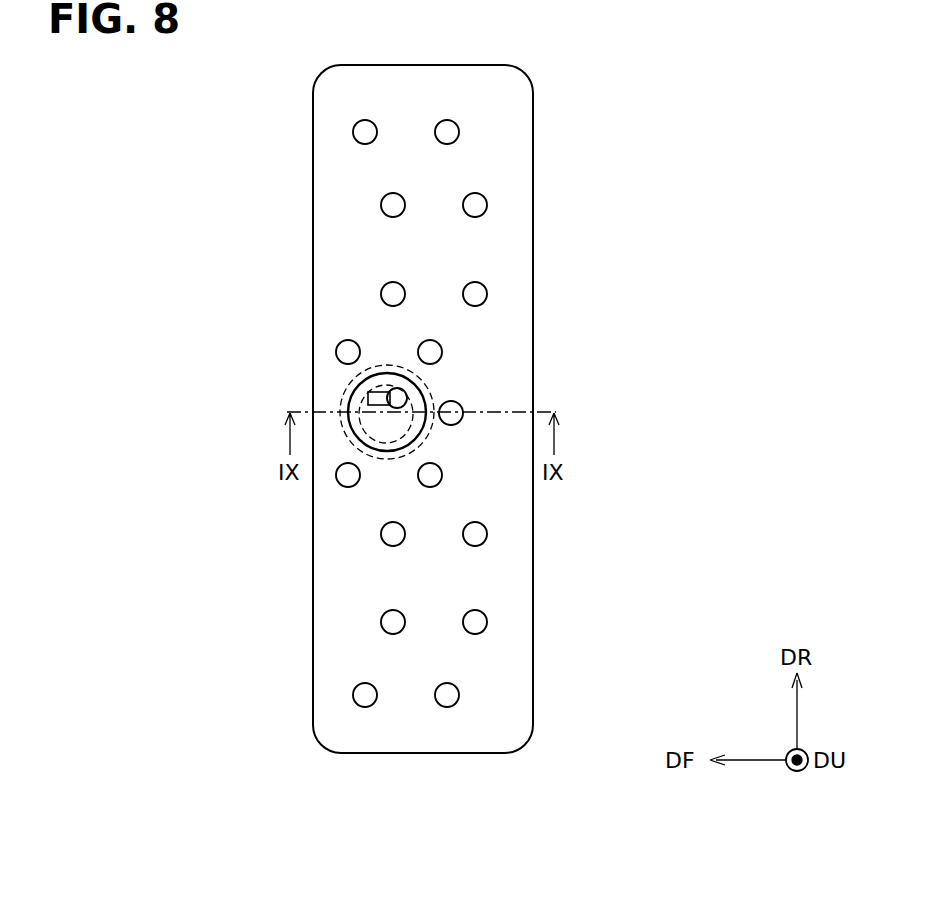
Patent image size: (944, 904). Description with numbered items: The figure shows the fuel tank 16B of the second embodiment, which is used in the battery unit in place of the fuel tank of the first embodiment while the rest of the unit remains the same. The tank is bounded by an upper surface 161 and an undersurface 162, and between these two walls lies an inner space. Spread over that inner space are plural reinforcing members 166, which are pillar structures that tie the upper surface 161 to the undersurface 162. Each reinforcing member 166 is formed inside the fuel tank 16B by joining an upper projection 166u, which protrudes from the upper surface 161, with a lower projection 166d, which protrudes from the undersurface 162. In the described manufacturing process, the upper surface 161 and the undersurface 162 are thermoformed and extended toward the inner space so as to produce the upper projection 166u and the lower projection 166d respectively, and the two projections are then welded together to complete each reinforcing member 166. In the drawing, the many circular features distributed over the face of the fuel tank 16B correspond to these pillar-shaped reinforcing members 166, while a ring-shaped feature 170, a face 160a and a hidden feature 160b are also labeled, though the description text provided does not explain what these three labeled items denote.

The fuel tank 16B is at (474, 401).
The front surface of plate 160a is at (313, 618).
The back side boss (hidden) 160b is at (366, 449).
The upper surface 161 is at (512, 613).
The undersurface 162 is at (512, 625).
The reinforcing member 166 is at (543, 413).
The upper projection 166u is at (568, 507).
The lower projection 166d is at (515, 526).
The ring-shaped mounting portion 170 is at (425, 395).